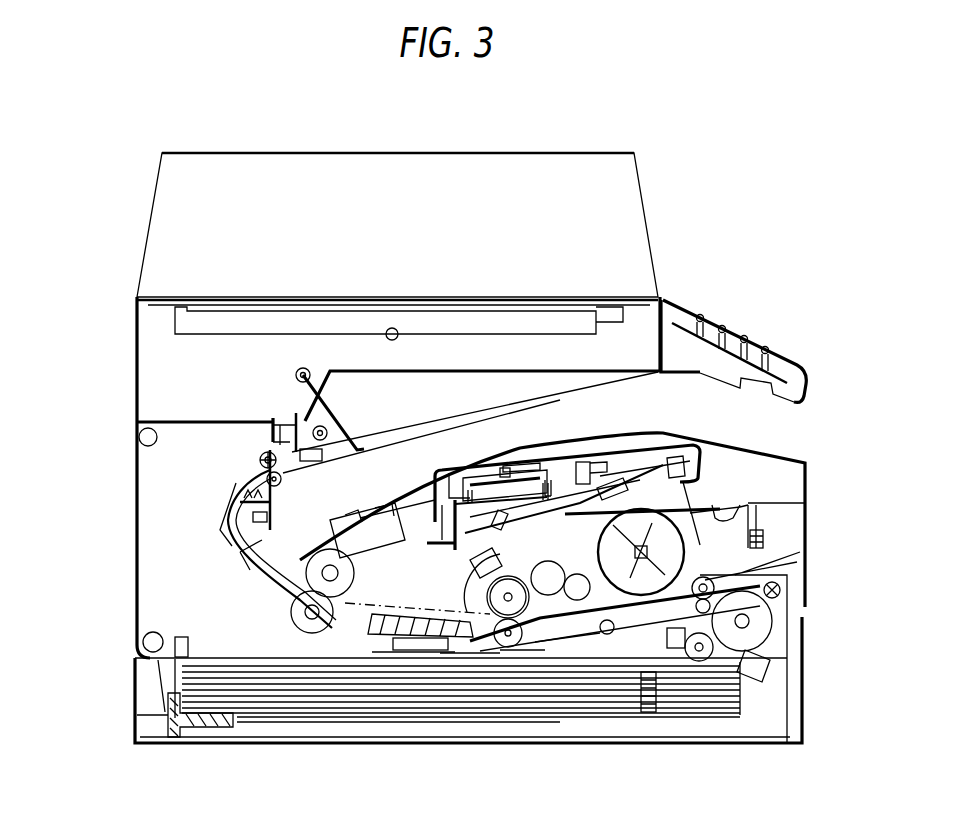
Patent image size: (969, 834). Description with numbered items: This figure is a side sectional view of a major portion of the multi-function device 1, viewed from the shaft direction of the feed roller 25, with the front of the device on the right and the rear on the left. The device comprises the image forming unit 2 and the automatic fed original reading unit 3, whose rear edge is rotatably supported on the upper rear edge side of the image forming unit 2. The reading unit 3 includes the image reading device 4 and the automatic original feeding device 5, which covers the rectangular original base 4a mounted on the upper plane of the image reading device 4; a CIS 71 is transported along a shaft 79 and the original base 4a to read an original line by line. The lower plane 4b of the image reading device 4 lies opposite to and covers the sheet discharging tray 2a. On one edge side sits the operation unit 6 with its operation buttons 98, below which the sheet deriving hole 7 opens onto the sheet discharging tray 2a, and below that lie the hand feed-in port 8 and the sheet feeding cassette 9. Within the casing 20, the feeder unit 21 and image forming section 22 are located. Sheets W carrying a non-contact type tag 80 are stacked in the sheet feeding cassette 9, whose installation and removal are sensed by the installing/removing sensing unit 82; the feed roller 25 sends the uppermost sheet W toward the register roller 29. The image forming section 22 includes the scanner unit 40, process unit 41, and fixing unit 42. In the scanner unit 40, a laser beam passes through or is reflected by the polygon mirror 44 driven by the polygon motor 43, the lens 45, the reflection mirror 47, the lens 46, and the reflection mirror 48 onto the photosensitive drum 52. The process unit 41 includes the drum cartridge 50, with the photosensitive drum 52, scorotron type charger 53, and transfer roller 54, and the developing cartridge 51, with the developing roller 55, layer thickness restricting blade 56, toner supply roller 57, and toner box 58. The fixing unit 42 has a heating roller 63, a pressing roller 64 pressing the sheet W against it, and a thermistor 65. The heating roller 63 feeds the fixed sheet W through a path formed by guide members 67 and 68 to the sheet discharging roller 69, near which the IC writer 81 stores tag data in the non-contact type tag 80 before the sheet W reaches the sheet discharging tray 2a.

The multi-function device 1 is at (783, 187).
The image forming unit 2 is at (120, 466).
The sheet discharging tray 2a is at (463, 458).
The automatic fed original reading unit 3 is at (62, 207).
The image reading device 4 is at (116, 336).
The original base 4a is at (541, 303).
The lower plane 4b is at (436, 378).
The automatic original feeding device 5 is at (128, 211).
The operation unit 6 is at (682, 301).
The sheet deriving hole 7 is at (808, 422).
The hand feed-in port 8 is at (811, 556).
The sheet feeding cassette 9 is at (806, 713).
The casing 20 is at (134, 527).
The feeder unit 21 is at (806, 668).
The image forming section 22 is at (471, 660).
The feed roller 25 is at (772, 629).
The register roller 29 is at (692, 604).
The scanner unit 40 is at (601, 440).
The process unit 41 is at (756, 505).
The fixing unit 42 is at (375, 505).
The polygon motor 43 is at (512, 465).
The polygon mirror 44 is at (545, 478).
The lens 45 is at (625, 476).
The lens 46 is at (636, 488).
The reflection mirror 47 is at (680, 456).
The reflection mirror 48 is at (452, 528).
The drum cartridge 50 is at (486, 606).
The developing cartridge 51 is at (722, 503).
The photosensitive drum 52 is at (514, 648).
The scorotron type charger 53 is at (462, 585).
The transfer roller 54 is at (522, 652).
The developing roller 55 is at (560, 645).
The layer thickness restricting blade 56 is at (579, 461).
The toner supply roller 57 is at (601, 631).
The toner box 58 is at (768, 545).
The heating roller 63 is at (305, 578).
The pressing roller 64 is at (290, 628).
The thermistor 65 is at (372, 541).
The guide member 67 is at (243, 553).
The guide member 68 is at (226, 506).
The sheet discharging roller 69 is at (259, 460).
The CIS 71 is at (211, 318).
The shaft 79 is at (392, 328).
The non-contact type tag 80 is at (648, 714).
The IC writer 81 is at (311, 462).
The installing/removing sensing unit 82 is at (180, 636).
The operation buttons 98 is at (726, 326).
The sheet W is at (282, 703).